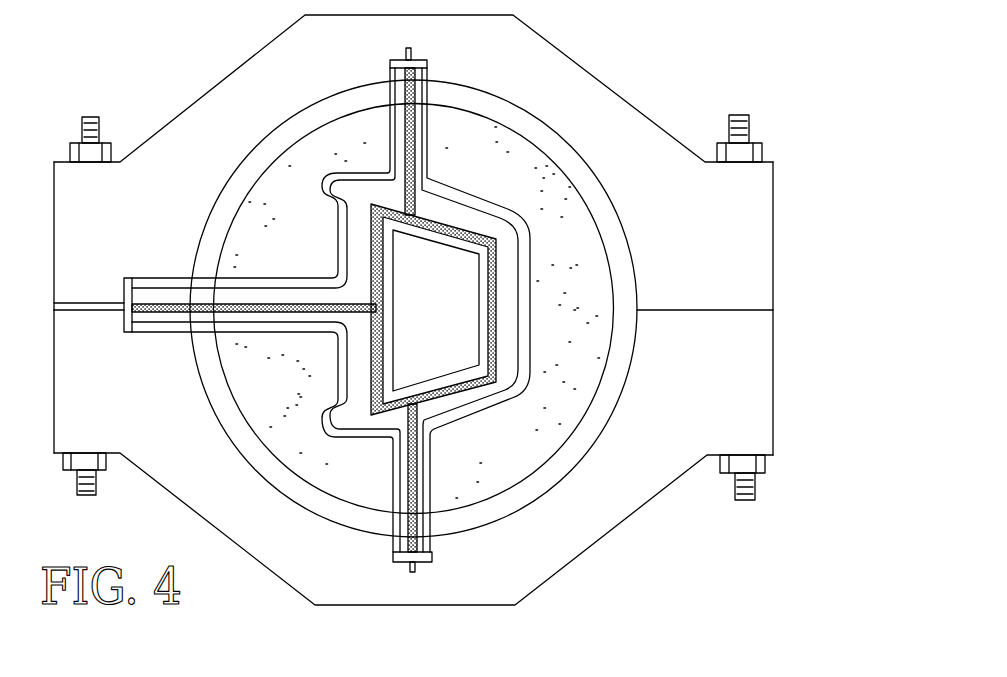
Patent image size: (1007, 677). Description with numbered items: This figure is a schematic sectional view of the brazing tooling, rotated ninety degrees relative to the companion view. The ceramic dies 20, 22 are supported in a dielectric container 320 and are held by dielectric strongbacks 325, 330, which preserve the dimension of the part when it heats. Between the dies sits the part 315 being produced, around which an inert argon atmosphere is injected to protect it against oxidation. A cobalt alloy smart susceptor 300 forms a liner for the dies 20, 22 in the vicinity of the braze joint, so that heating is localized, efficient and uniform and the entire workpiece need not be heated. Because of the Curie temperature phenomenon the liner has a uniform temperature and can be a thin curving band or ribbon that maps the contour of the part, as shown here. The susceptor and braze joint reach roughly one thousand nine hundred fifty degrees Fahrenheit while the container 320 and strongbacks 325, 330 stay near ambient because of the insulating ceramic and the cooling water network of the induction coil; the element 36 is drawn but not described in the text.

The ceramic die 20 is at (542, 192).
The ceramic die 22 is at (490, 478).
The thin-walled housing and tubes 36 is at (387, 123).
The smart susceptor 300 is at (417, 505).
The part 315 is at (388, 393).
The dielectric container 320 is at (543, 478).
The dielectric strongback 325 is at (542, 70).
The dielectric strongback 330 is at (182, 448).